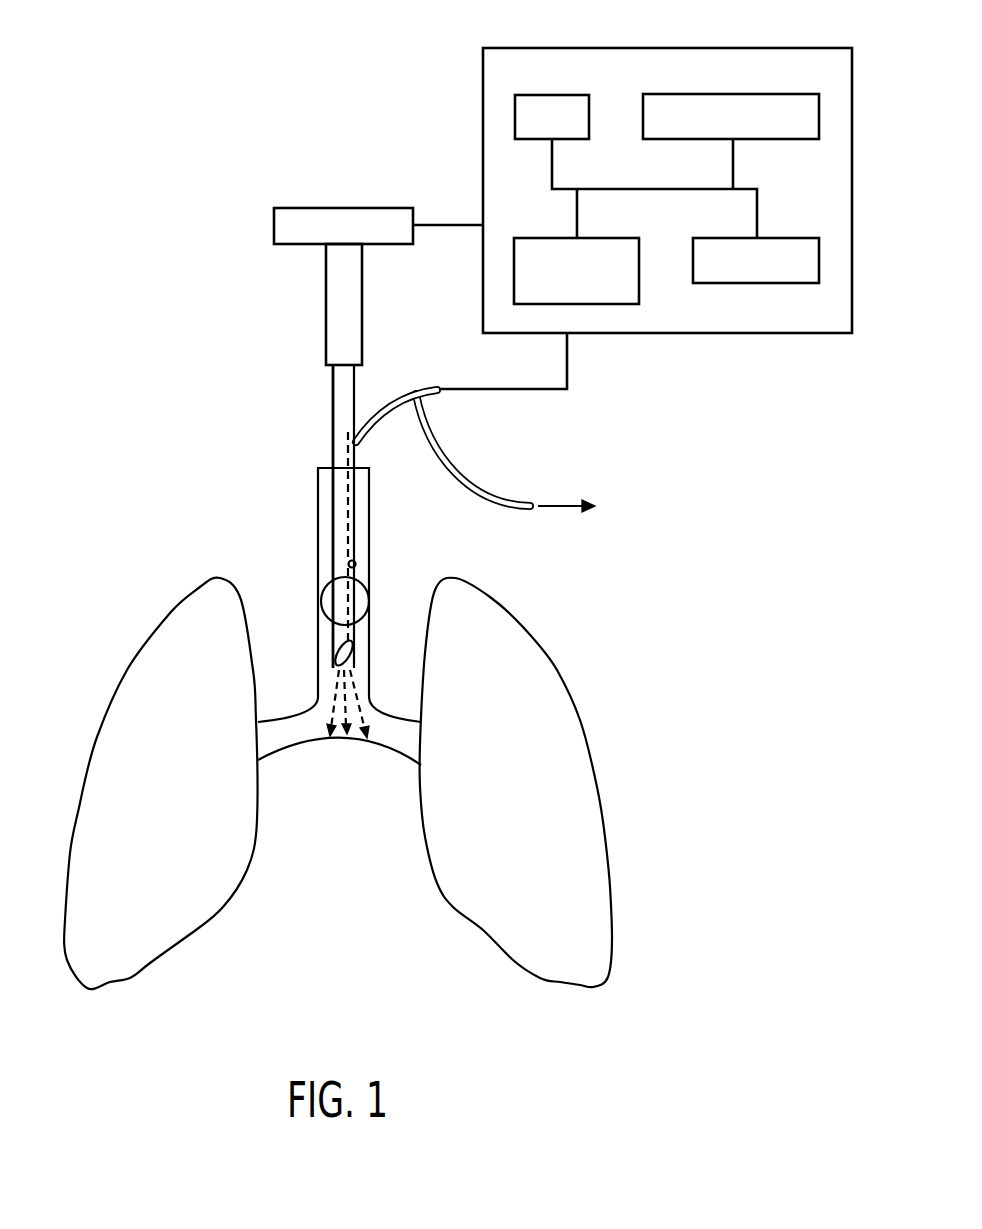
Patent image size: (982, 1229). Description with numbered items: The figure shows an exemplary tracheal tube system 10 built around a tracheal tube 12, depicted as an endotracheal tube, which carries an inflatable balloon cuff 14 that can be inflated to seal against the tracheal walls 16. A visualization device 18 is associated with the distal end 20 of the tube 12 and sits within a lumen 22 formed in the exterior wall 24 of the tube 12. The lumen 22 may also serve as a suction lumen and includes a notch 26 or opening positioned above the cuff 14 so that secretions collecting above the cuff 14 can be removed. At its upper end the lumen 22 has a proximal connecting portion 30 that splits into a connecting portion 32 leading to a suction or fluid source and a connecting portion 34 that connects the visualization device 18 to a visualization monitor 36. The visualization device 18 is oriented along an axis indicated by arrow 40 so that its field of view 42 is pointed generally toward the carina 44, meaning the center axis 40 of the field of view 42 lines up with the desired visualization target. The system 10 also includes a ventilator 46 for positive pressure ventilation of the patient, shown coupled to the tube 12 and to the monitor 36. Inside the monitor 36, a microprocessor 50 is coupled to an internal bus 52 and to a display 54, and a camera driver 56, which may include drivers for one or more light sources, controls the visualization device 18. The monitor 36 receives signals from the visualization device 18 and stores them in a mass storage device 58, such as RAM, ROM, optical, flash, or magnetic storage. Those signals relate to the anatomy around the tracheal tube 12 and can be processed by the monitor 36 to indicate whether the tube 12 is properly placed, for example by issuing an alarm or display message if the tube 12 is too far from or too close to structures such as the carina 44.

The tracheal tube system 10 is at (225, 285).
The tracheal tube 12 is at (342, 457).
The inflatable balloon cuff 14 is at (326, 592).
The tracheal walls 16 is at (318, 522).
The visualization device 18 is at (352, 648).
The distal end 20 is at (338, 656).
The lumen 22 is at (350, 536).
The exterior wall 24 is at (353, 504).
The notch 26 is at (356, 563).
The proximal connecting portion 30 is at (370, 408).
The connecting portion 32 is at (478, 491).
The connecting portion 34 is at (417, 383).
The visualization monitor 36 is at (669, 48).
The center axis 40 is at (357, 740).
The field of view 42 is at (364, 708).
The carina 44 is at (345, 740).
The ventilator 46 is at (343, 208).
The microprocessor 50 is at (517, 139).
The internal bus 52 is at (565, 189).
The display 54 is at (772, 238).
The camera driver 56 is at (598, 238).
The mass storage device 58 is at (790, 139).